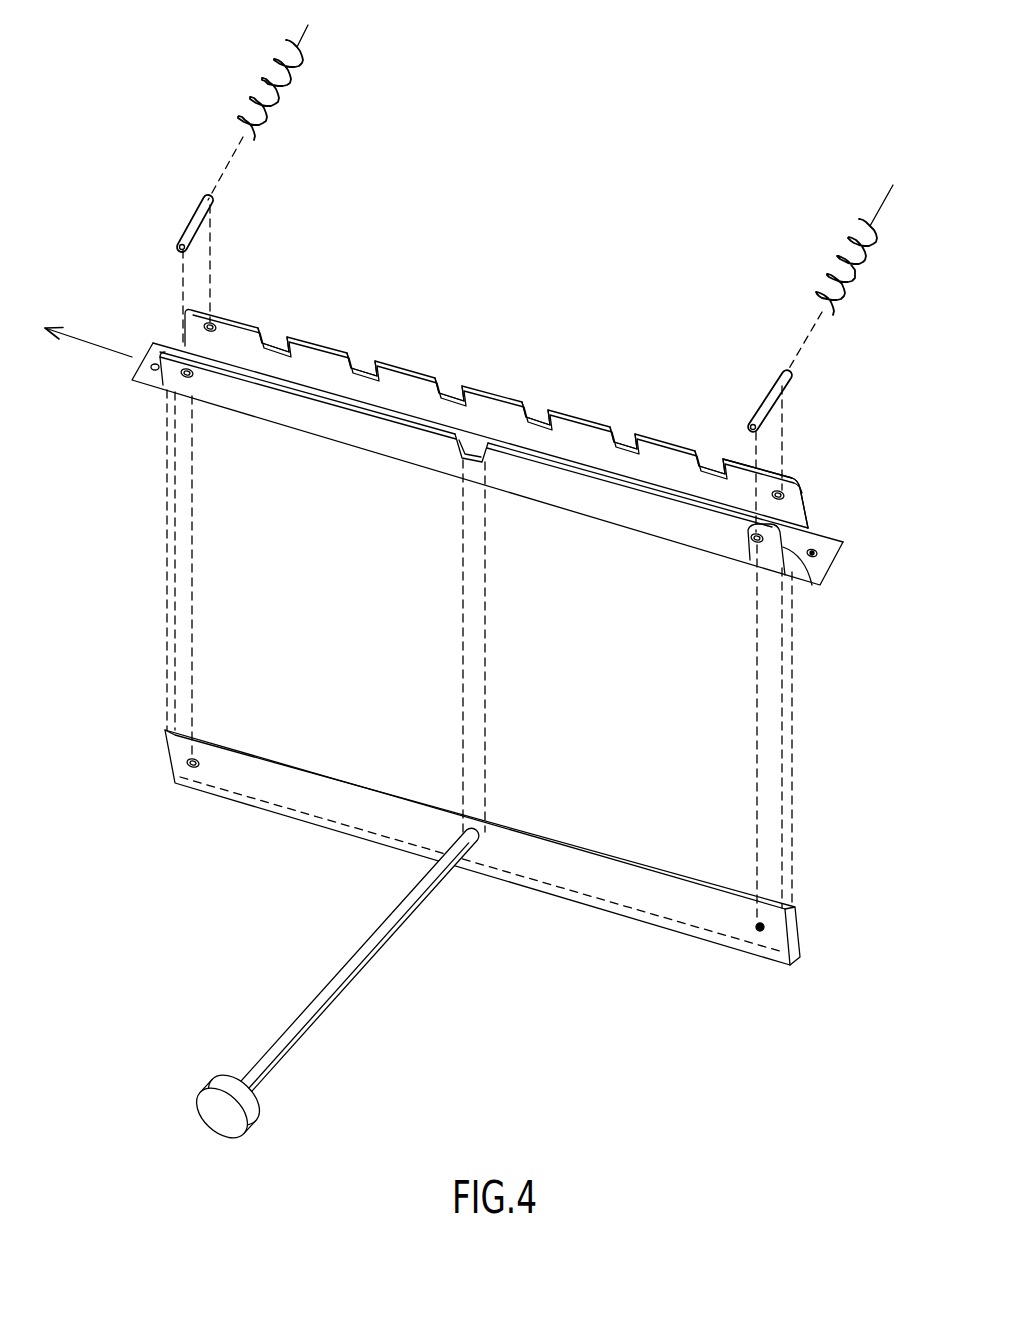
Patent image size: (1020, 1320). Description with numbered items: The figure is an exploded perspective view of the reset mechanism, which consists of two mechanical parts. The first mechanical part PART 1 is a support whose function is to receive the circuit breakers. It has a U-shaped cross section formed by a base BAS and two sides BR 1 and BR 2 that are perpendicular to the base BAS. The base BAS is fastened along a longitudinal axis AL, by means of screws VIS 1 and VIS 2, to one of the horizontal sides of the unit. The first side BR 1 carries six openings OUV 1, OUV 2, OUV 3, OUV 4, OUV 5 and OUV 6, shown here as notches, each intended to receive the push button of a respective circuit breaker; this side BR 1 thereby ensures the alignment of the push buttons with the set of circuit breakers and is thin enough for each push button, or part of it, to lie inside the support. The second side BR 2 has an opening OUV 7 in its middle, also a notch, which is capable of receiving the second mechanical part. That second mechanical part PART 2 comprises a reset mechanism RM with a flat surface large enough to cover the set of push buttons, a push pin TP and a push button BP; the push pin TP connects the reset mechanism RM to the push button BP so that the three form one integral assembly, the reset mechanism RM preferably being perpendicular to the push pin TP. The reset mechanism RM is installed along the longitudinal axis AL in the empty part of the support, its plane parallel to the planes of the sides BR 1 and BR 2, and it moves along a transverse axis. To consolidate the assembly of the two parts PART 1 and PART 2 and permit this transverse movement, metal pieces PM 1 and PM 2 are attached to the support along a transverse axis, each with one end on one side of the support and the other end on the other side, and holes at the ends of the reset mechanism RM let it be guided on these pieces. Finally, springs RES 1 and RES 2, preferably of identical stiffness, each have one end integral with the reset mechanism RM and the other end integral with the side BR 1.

The spring RES 1 is at (292, 97).
The spring RES 2 is at (840, 250).
The metal piece PM 1 is at (205, 218).
The metal piece PM 2 is at (790, 388).
The first mechanical part PART 1 is at (168, 340).
The second mechanical part PART 2 is at (232, 797).
The longitudinal axis AL is at (88, 348).
The screw VIS 1 is at (812, 553).
The screw VIS 2 is at (158, 370).
The opening OUV 1 is at (273, 338).
The opening OUV 2 is at (362, 363).
The opening OUV 3 is at (448, 393).
The opening OUV 4 is at (537, 418).
The opening OUV 5 is at (627, 443).
The opening OUV 6 is at (713, 468).
The opening OUV 7 is at (458, 448).
The side BR 1 is at (765, 470).
The side BR 2 is at (787, 575).
The base BAS is at (823, 547).
The reset mechanism RM is at (790, 905).
The push pin TP is at (402, 967).
The push button BP is at (262, 1100).